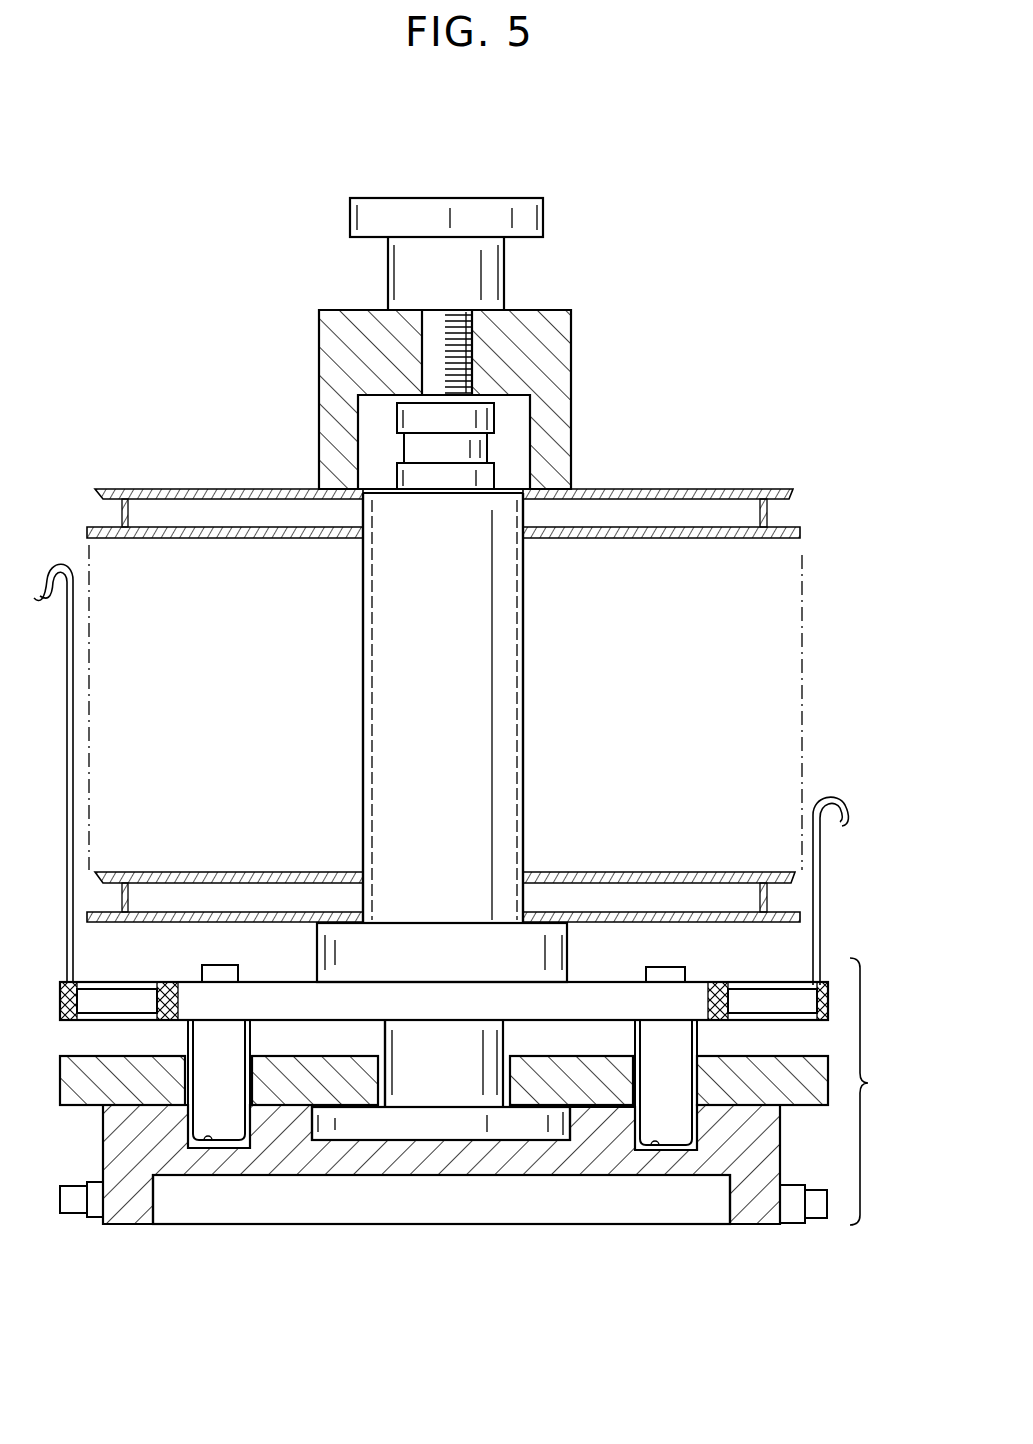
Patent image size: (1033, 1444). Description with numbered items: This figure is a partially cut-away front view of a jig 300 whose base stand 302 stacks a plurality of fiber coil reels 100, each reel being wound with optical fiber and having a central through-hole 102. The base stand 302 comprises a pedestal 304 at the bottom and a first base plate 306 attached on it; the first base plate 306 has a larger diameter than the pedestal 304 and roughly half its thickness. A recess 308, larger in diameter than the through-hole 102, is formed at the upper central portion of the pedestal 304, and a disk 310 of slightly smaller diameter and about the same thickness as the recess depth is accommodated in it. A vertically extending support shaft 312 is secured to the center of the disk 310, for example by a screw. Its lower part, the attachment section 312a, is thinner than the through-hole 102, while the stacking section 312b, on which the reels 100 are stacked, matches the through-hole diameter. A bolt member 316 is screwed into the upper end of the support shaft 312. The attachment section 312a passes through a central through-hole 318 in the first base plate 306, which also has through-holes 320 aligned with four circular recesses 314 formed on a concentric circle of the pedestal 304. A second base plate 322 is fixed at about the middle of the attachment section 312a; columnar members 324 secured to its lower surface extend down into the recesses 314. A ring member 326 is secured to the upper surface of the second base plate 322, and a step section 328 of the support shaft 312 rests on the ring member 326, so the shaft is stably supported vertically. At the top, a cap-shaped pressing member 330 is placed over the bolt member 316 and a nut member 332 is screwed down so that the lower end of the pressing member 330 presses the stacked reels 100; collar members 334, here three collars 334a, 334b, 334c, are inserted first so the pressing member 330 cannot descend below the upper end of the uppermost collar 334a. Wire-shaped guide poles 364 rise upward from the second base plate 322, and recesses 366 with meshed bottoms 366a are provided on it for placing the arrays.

The jig 300 is at (666, 375).
The base stand 302 is at (891, 1091).
The pedestal 304 is at (318, 1160).
The first base plate 306 is at (598, 1085).
The recess 308 is at (420, 1142).
The disk 310 is at (507, 1142).
The support shaft 312 is at (532, 684).
The attachment section 312a is at (312, 1107).
The stacking section 312b is at (527, 637).
The recesses 314 is at (205, 1150).
The bolt member 316 is at (473, 383).
The through-hole 318 is at (503, 1075).
The through-holes 320 is at (165, 990).
The second base plate 322 is at (258, 997).
The ring member 326 is at (340, 937).
The step section 328 is at (400, 922).
The columnar members 324 is at (213, 1098).
The pressing member 330 is at (322, 338).
The nut member 332 is at (500, 207).
The collar members 334 is at (293, 410).
The uppermost collar member 334a is at (412, 415).
The collar member 334b is at (412, 443).
The collar member 334c is at (412, 475).
The guide poles 364 is at (820, 905).
The recesses 366 is at (808, 985).
The meshed bottoms 366a is at (785, 992).
The fiber coil reel 100 is at (718, 493).
The through-hole 102 is at (513, 880).